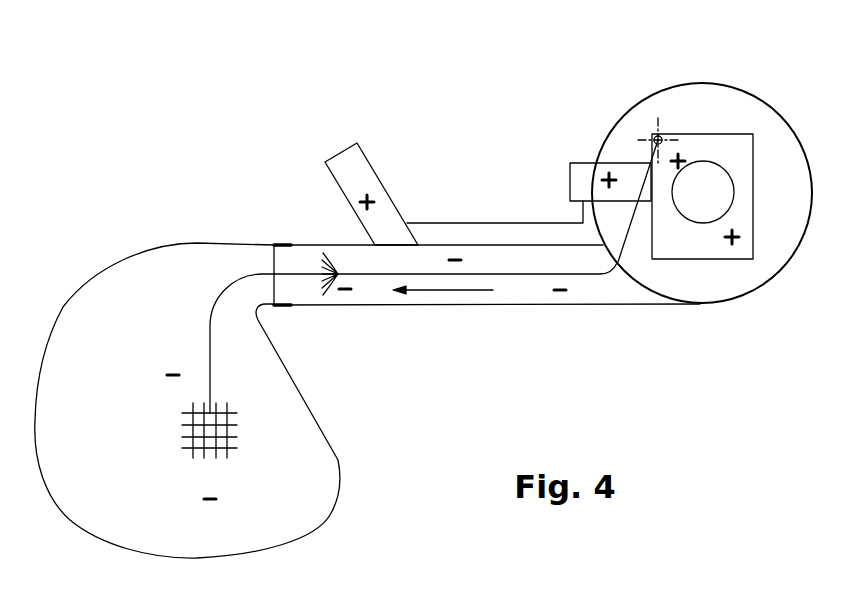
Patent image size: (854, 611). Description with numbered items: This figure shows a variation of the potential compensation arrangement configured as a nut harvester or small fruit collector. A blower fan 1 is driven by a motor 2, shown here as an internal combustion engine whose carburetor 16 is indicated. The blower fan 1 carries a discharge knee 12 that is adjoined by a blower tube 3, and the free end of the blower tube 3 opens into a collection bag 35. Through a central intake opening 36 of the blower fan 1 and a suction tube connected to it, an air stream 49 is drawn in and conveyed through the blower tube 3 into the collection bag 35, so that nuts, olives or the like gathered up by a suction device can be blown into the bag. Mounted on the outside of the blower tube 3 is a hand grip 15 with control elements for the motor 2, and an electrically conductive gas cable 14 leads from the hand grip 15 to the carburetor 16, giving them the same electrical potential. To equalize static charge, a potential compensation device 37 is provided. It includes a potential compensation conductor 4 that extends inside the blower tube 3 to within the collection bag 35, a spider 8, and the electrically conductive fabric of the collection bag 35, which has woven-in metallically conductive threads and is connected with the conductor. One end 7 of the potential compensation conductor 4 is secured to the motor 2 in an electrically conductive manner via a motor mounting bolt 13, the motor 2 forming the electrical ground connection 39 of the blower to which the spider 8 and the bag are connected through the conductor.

The blower fan 1 is at (697, 90).
The motor 2 is at (730, 142).
The blower tube 3 is at (307, 243).
The potential compensation conductor 4 is at (210, 338).
The end of the potential compensation conductor 7 is at (666, 112).
The spider 8 is at (330, 280).
The discharge knee 12 is at (648, 276).
The motor mounting bolt 13 is at (656, 136).
The gas cable 14 is at (462, 222).
The hand grip 15 is at (375, 182).
The carburetor 16 is at (587, 167).
The collection bag 35 is at (338, 462).
The central intake opening 36 is at (726, 172).
The potential compensation device 37 is at (228, 452).
The electrical ground connection 39 is at (722, 260).
The air stream 49 is at (446, 292).